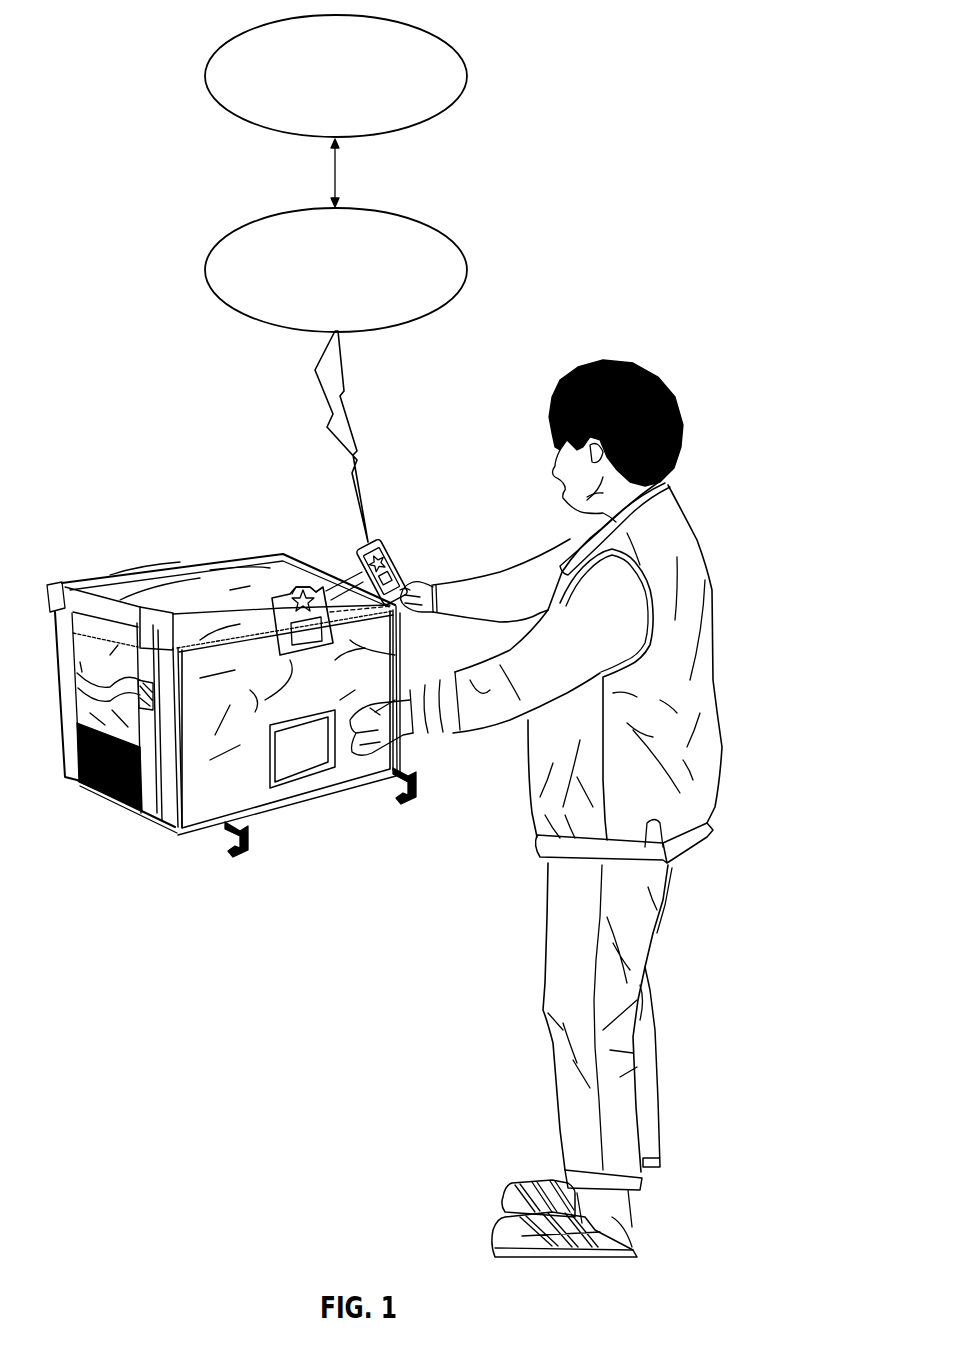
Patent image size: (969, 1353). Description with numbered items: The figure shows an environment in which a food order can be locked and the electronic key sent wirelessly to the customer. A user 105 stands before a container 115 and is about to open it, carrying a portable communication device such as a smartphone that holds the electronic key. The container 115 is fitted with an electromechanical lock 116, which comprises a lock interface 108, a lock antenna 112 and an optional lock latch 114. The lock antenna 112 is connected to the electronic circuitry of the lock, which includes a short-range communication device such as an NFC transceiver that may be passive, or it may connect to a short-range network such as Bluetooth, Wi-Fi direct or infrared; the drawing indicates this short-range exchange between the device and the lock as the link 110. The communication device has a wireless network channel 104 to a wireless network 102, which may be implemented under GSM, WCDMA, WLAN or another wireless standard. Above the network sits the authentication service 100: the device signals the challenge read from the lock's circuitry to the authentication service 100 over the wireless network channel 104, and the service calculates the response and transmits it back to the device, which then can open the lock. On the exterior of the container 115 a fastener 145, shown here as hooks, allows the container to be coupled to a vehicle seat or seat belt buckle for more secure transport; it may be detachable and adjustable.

The authentication service 100 is at (258, 27).
The wireless network 102 is at (268, 219).
The wireless network channel 104 is at (352, 437).
The user 105 is at (393, 550).
The lock interface 108 is at (308, 652).
The short-range communication link 110 is at (352, 568).
The lock antenna 112 is at (288, 595).
The lock latch 114 is at (402, 660).
The container 115 is at (180, 571).
The electromechanical lock 116 is at (258, 559).
The fastener 145 is at (211, 847).